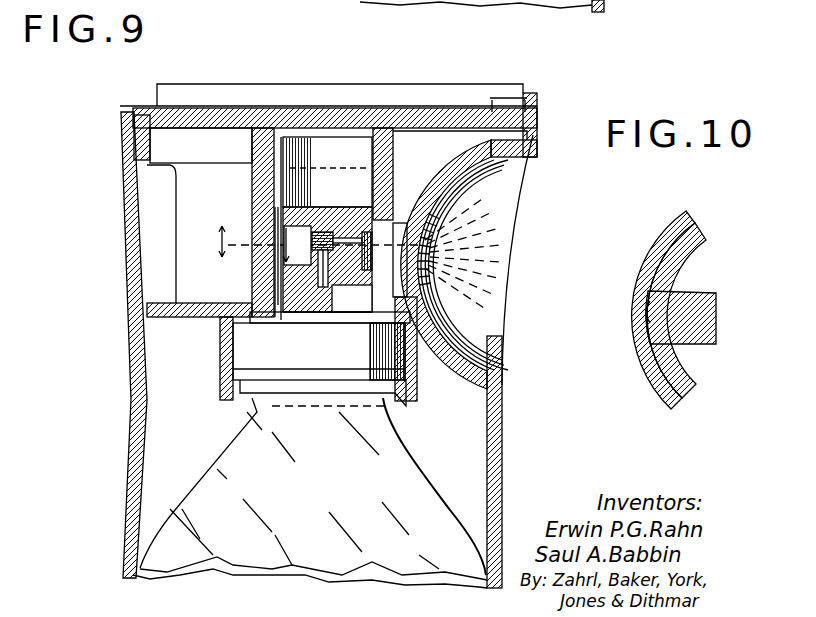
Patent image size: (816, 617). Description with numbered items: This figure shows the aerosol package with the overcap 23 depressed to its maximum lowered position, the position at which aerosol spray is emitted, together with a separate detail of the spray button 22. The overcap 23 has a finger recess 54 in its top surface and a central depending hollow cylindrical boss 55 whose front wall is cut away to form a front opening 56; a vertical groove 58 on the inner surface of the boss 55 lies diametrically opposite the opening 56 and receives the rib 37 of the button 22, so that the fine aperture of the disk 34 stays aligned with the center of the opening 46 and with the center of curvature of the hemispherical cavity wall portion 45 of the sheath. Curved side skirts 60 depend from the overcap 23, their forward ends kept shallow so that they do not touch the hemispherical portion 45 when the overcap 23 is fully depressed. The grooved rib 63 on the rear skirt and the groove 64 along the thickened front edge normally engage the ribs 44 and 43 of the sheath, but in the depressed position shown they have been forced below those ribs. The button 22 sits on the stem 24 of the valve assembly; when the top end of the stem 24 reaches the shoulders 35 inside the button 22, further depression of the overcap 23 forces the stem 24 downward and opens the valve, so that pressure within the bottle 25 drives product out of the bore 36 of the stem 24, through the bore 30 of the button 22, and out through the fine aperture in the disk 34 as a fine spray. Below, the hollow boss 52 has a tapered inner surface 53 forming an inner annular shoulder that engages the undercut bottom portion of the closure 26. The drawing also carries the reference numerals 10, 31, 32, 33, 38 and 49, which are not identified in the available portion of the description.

In FIG. 9, the optical axis 10 is at (305, 243).
In FIG. 9, the button 22 is at (280, 270).
In FIG. 10, the button 22 is at (692, 256).
In FIG. 9, the overcap 23 is at (413, 110).
In FIG. 9, the stem 24 is at (327, 287).
In FIG. 9, the bottle 25 is at (322, 492).
In FIG. 9, the closure 26 is at (326, 371).
In FIG. 9, the bore 30 is at (353, 214).
In FIG. 9, the light rays 31 is at (415, 296).
In FIG. 9, the contact pin 32 is at (365, 298).
In FIG. 9, the contact block 33 is at (352, 298).
In FIG. 9, the disk 34 is at (418, 230).
In FIG. 9, the shoulders 35 is at (322, 230).
In FIG. 9, the bore of stem 36 is at (309, 290).
In FIG. 9, the rib 37 is at (279, 301).
In FIG. 10, the rib 37 is at (651, 306).
In FIG. 10, the lug 38 is at (651, 321).
In FIG. 9, the rib 43 is at (519, 97).
In FIG. 9, the rib 44 is at (122, 132).
In FIG. 9, the hemispherical cavity wall portion 45 is at (530, 162).
In FIG. 9, the opening 46 is at (429, 319).
In FIG. 9, the socket 49 is at (400, 328).
In FIG. 9, the hollow boss 52 is at (220, 370).
In FIG. 9, the inner surface 53 is at (245, 385).
In FIG. 9, the finger recess 54 is at (248, 112).
In FIG. 9, the hollow cylindrical boss 55 is at (250, 144).
In FIG. 10, the hollow cylindrical boss 55 is at (651, 249).
In FIG. 9, the front opening 56 is at (388, 226).
In FIG. 9, the vertical groove 58 is at (275, 216).
In FIG. 9, the side skirt 60 is at (195, 167).
In FIG. 9, the grooved rib 63 is at (120, 147).
In FIG. 9, the groove 64 is at (528, 132).